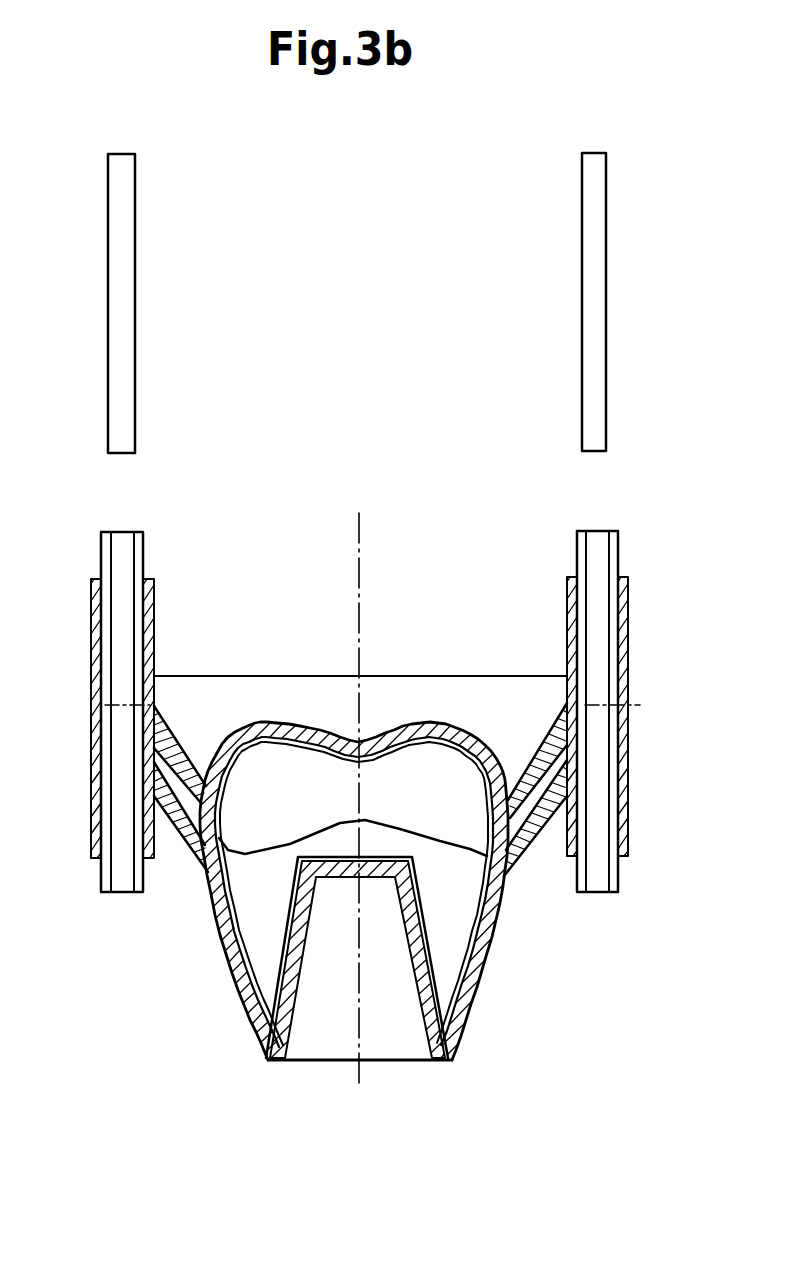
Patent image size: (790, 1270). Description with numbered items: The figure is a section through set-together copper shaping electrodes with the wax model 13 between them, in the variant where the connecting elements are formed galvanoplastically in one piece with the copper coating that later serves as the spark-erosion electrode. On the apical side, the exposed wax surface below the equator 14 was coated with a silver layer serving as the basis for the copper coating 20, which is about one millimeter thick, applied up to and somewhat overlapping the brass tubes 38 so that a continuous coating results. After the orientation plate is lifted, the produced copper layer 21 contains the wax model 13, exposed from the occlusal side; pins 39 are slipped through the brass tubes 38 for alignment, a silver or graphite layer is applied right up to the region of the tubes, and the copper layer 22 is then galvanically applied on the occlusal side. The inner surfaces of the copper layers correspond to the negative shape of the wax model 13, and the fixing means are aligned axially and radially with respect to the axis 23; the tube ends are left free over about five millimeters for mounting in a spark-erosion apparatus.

The wax model 13 is at (432, 760).
The equator 14 is at (502, 887).
The copper coating 20 is at (250, 1010).
The copper layer 21 is at (278, 738).
The copper layer 22 is at (153, 600).
The axis 23 is at (360, 565).
The brass tubes 38 is at (108, 558).
The pins 39 is at (122, 312).